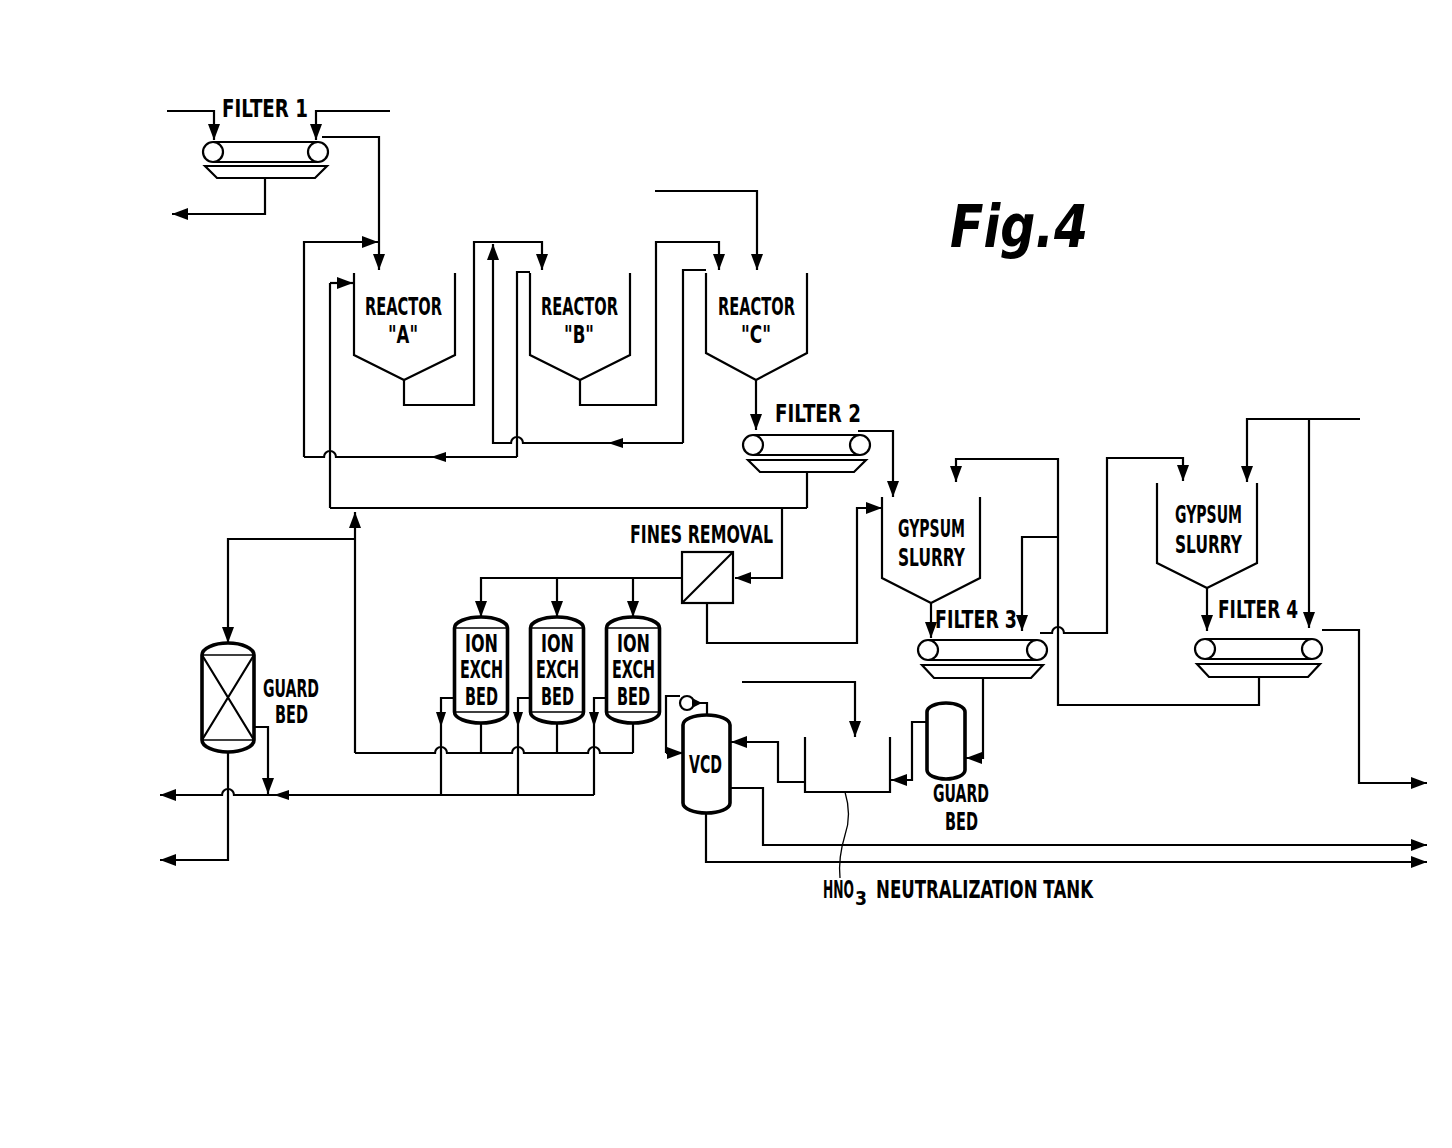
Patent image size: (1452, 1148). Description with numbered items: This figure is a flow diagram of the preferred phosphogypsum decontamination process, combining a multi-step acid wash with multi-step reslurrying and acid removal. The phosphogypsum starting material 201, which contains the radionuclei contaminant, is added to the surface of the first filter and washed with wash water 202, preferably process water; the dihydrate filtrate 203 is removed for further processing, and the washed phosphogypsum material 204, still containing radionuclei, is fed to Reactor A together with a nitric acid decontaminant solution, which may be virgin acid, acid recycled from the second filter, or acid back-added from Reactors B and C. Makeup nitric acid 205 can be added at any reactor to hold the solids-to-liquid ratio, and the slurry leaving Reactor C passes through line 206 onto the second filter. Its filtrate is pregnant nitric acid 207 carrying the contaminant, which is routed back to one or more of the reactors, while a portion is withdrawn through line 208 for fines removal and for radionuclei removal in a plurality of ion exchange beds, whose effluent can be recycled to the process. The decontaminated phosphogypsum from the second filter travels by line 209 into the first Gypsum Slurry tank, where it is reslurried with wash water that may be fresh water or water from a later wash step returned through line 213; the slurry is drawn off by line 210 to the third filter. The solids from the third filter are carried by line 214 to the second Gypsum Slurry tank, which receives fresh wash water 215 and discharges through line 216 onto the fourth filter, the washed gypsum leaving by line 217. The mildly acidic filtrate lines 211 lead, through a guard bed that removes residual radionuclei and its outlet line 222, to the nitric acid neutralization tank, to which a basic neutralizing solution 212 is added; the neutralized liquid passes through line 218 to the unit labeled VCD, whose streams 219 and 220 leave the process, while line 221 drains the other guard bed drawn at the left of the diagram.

The phosphogypsum starting material 201 is at (190, 112).
The wash water 202 is at (362, 113).
The dihydrate filtrate 203 is at (208, 214).
The washed phosphogypsum material 204 is at (380, 191).
The makeup nitric acid 205 is at (728, 190).
The line 206 is at (756, 396).
The pregnant nitric acid 207 is at (733, 508).
The line 208 is at (782, 545).
The filter 2 solids line to gypsum slurry 209 is at (895, 431).
The gypsum slurry line to filter 3 210 is at (929, 614).
The filtrate lines 211 is at (984, 730).
The neutralizing agent feed to HNO3 neutralization tank 212 is at (855, 694).
The line 213 is at (1060, 568).
The filter 3 wash recycle line to gypsum slurry 214 is at (1108, 565).
The wash water feed 215 is at (1319, 419).
The gypsum slurry line to filter 4 216 is at (1200, 611).
The gypsum product discharge 217 is at (1359, 733).
The neutralized solution line to VCD 218 is at (763, 741).
The VCD condensate outlet 219 is at (764, 829).
The VCD bottoms outlet 220 is at (706, 846).
The guard bed effluent outlet 221 is at (229, 845).
The guard bed effluent line to neutralization tank 222 is at (912, 787).